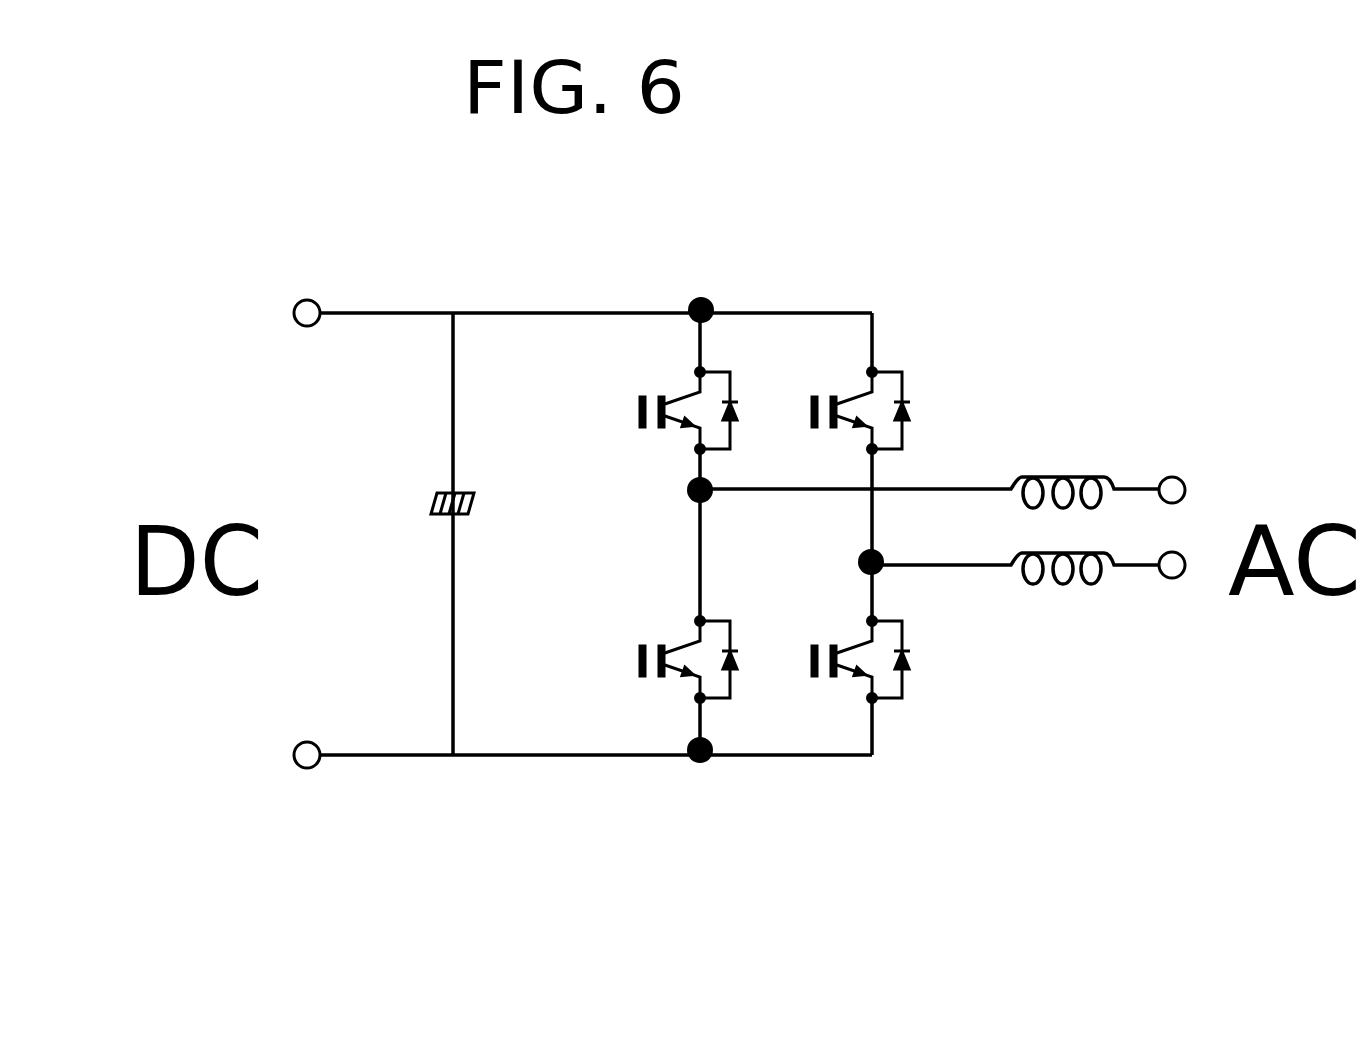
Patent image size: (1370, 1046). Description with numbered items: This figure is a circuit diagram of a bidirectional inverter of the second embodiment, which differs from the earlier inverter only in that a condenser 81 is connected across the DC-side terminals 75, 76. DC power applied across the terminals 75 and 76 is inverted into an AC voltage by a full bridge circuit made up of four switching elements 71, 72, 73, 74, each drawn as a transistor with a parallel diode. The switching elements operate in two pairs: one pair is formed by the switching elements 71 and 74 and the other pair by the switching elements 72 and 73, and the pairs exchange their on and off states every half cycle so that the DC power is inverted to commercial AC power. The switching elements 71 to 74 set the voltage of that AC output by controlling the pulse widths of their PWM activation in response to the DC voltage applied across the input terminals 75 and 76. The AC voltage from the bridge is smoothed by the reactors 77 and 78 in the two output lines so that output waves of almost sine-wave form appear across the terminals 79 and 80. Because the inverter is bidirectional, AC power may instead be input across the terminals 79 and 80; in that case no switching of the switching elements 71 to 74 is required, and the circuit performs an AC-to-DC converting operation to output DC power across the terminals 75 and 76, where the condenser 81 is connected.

The switching element 71 is at (654, 401).
The switching element 72 is at (908, 393).
The switching element 73 is at (654, 636).
The switching element 74 is at (915, 678).
The terminal 75 is at (327, 278).
The terminal 76 is at (310, 721).
The reactor 77 is at (1062, 459).
The reactor 78 is at (1062, 607).
The terminal 79 is at (1167, 452).
The terminal 80 is at (1160, 613).
The condenser 81 is at (413, 469).